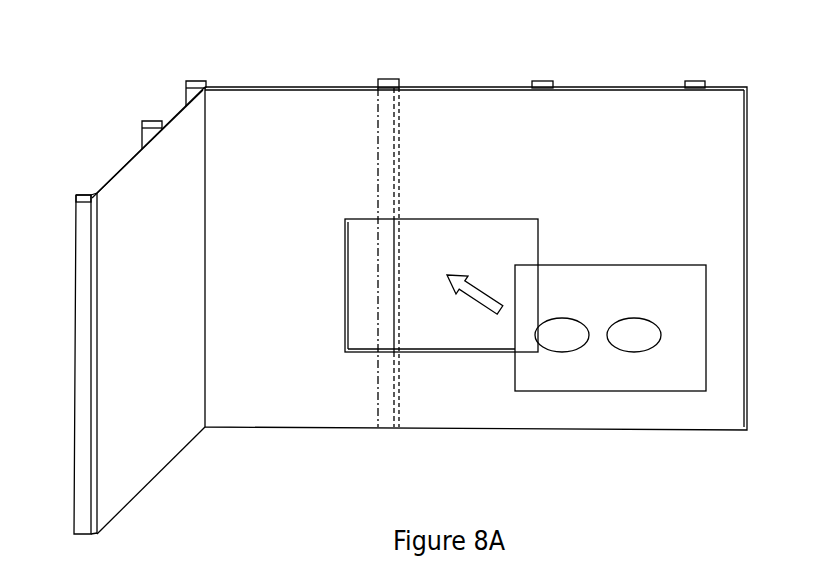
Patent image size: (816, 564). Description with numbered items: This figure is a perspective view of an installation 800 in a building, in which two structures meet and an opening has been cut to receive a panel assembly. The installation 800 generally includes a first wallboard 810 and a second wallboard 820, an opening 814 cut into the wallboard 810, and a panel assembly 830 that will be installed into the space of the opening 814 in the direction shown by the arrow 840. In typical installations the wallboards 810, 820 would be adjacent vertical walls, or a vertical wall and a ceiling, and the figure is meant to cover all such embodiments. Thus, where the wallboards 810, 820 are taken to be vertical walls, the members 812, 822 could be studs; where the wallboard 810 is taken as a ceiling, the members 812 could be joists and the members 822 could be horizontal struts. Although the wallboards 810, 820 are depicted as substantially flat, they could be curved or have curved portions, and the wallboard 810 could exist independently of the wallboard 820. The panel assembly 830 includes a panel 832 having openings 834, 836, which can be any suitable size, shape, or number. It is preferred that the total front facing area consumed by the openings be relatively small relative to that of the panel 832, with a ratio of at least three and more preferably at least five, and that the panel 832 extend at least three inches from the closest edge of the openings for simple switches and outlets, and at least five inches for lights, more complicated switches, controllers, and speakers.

The installation 800 is at (491, 62).
The wallboard 810 is at (265, 85).
The member 812 is at (196, 80).
The opening 814 is at (343, 251).
The wallboard 820 is at (118, 170).
The member 822 is at (78, 195).
The panel assembly 830 is at (590, 232).
The panel 832 is at (654, 264).
The opening 834 is at (566, 318).
The second aperture 836 is at (650, 320).
The arrow 840 is at (478, 283).